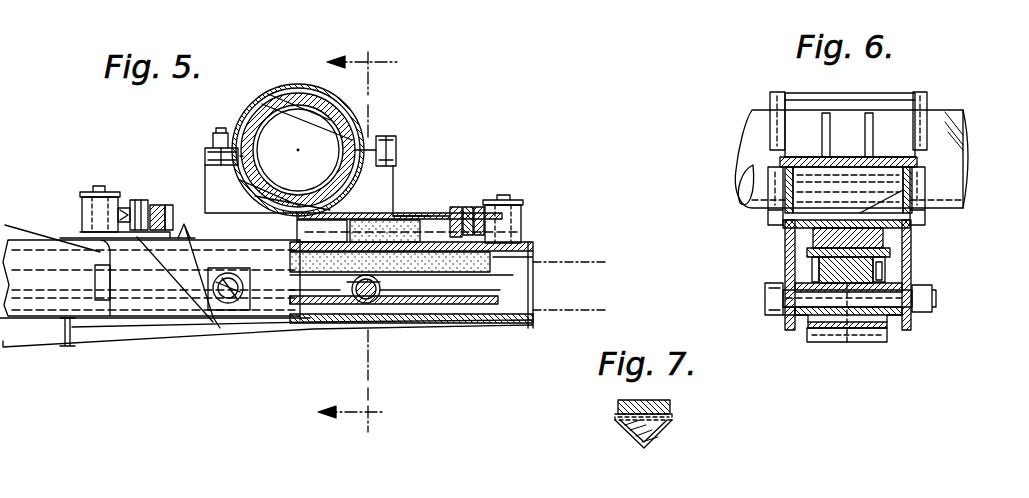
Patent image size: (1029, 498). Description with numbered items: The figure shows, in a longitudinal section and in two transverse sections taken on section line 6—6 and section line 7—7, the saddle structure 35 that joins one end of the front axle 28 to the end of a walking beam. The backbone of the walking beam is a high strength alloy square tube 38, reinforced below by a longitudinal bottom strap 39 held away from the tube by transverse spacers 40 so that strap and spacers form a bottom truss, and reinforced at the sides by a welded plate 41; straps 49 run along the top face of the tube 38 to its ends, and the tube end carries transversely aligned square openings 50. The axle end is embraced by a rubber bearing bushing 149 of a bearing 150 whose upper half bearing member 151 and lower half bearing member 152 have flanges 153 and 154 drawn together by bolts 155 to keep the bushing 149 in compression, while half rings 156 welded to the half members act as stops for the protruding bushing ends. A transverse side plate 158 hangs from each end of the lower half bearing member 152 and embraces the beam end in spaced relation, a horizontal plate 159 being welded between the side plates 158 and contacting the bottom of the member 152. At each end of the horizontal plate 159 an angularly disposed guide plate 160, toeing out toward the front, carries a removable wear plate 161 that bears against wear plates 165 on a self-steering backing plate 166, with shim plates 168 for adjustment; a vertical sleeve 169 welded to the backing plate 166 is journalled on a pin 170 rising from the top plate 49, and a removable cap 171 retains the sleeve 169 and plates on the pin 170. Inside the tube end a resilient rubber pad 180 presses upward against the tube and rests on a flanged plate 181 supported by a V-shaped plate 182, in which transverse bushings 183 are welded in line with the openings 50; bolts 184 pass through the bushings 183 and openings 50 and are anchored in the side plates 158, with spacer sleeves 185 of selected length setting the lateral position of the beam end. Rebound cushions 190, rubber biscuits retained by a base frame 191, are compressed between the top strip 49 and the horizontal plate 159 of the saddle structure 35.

In FIG. 5, the front axle 28 is at (287, 100).
In FIG. 6, the front axle 28 is at (960, 126).
In FIG. 5, the saddle structure 35 is at (195, 150).
In FIG. 5, the square tube 38 is at (260, 276).
In FIG. 6, the square tube 38 is at (888, 263).
In FIG. 5, the bottom strap 39 is at (16, 348).
In FIG. 6, the bottom strap 39 is at (845, 344).
In FIG. 5, the transverse spacers 40 is at (67, 343).
In FIG. 5, the plate 41 is at (20, 222).
In FIG. 5, the straps 49 is at (533, 242).
In FIG. 6, the straps 49 is at (893, 251).
In FIG. 5, the square openings 50 is at (358, 340).
In FIG. 6, the square openings 50 is at (783, 274).
In FIG. 5, the rubber bearing bushing 149 is at (288, 86).
In FIG. 5, the bearing 150 is at (238, 106).
In FIG. 6, the bearing 150 is at (830, 84).
In FIG. 5, the upper half bearing member 151 is at (347, 102).
In FIG. 6, the upper half bearing member 151 is at (890, 98).
In FIG. 5, the lower half bearing member 152 is at (387, 200).
In FIG. 6, the lower half bearing member 152 is at (874, 186).
In FIG. 5, the flange 153 is at (396, 149).
In FIG. 5, the flange 154 is at (396, 158).
In FIG. 5, the bolts 155 is at (220, 132).
In FIG. 5, the half rings 156 is at (258, 86).
In FIG. 6, the half rings 156 is at (773, 85).
In FIG. 5, the transverse side plate 158 is at (224, 226).
In FIG. 6, the transverse side plate 158 is at (788, 237).
In FIG. 5, the horizontal plate 159 is at (400, 202).
In FIG. 6, the horizontal plate 159 is at (932, 193).
In FIG. 5, the guide plate 160 is at (450, 212).
In FIG. 5, the wear plates 161 is at (449, 205).
In FIG. 5, the wear plates 165 is at (475, 162).
In FIG. 5, the backing plate 166 is at (112, 194).
In FIG. 5, the shim plates 168 is at (480, 207).
In FIG. 5, the vertical sleeve 169 is at (83, 220).
In FIG. 5, the pin 170 is at (87, 192).
In FIG. 5, the removable cap 171 is at (84, 189).
In FIG. 5, the rubber pad 180 is at (455, 307).
In FIG. 6, the rubber pad 180 is at (890, 279).
In FIG. 7, the rubber pad 180 is at (670, 408).
In FIG. 5, the plate 181 is at (423, 305).
In FIG. 6, the plate 181 is at (870, 342).
In FIG. 7, the plate 181 is at (622, 422).
In FIG. 5, the V-shaped plate 182 is at (500, 309).
In FIG. 7, the V-shaped plate 182 is at (650, 440).
In FIG. 5, the transverse bushings 183 is at (352, 289).
In FIG. 6, the transverse bushings 183 is at (855, 343).
In FIG. 5, the bolts 184 is at (216, 328).
In FIG. 6, the bolts 184 is at (930, 303).
In FIG. 6, the spacer sleeves 185 is at (895, 284).
In FIG. 5, the rebound cushions 190 is at (394, 216).
In FIG. 6, the rebound cushions 190 is at (810, 252).
In FIG. 5, the base frame 191 is at (337, 236).
In FIG. 6, the base frame 191 is at (888, 252).
In FIG. 5, the section line 6— 6 is at (357, 248).
In FIG. 5, the section line 7— 7 is at (569, 283).